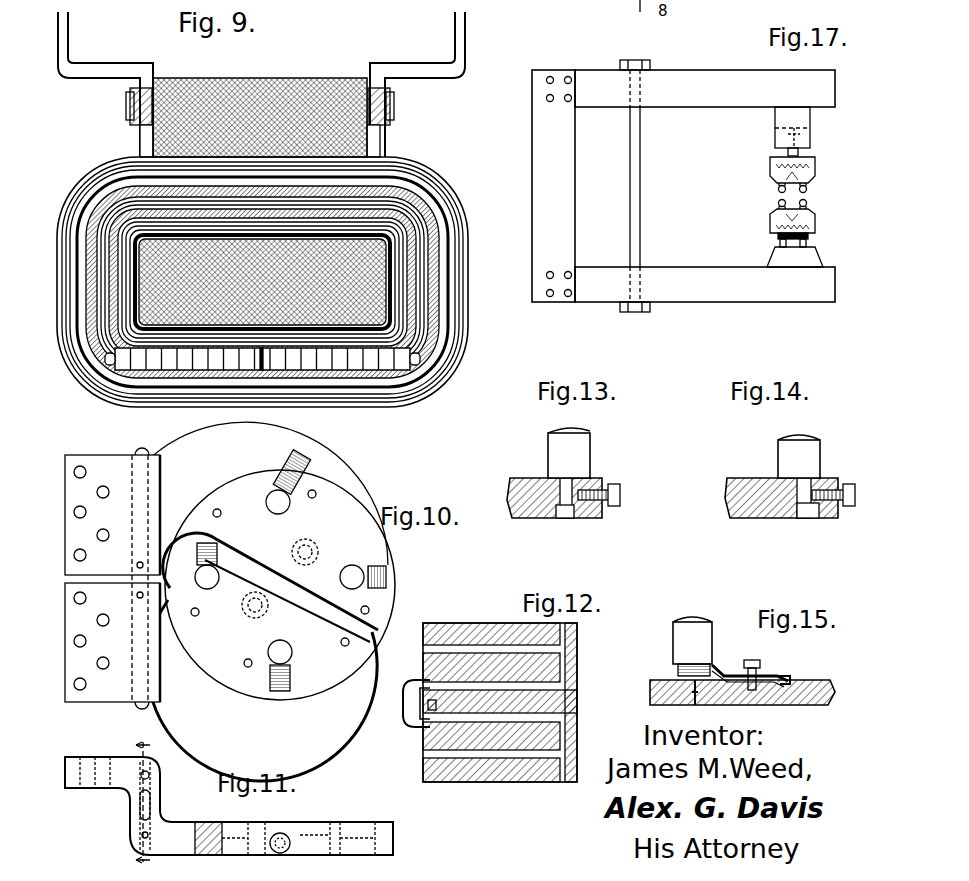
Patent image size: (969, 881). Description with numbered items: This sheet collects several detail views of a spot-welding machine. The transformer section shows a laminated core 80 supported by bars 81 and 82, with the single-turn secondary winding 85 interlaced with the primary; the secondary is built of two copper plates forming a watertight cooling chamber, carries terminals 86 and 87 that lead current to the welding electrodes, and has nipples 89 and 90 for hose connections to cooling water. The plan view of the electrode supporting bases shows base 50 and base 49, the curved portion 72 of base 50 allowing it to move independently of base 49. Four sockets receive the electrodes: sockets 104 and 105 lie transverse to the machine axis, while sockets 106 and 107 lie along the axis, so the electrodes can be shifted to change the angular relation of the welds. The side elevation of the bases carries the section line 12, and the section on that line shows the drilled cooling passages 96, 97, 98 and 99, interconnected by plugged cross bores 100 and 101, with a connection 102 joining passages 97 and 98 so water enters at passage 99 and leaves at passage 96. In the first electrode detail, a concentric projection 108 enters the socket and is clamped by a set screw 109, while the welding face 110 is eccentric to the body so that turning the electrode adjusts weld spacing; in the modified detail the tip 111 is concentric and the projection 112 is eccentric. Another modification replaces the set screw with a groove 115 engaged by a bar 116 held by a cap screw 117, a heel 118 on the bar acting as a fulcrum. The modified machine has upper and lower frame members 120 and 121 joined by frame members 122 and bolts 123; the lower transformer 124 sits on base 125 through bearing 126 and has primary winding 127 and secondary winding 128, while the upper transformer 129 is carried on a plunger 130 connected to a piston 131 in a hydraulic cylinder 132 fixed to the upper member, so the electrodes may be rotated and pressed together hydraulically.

In FIG. 9, the core 80 is at (268, 86).
In FIG. 9, the bar 81 is at (68, 33).
In FIG. 9, the bar 82 is at (465, 25).
In FIG. 9, the secondary winding 85 is at (406, 214).
In FIG. 9, the terminal 86 is at (125, 378).
In FIG. 9, the terminal 87 is at (340, 368).
In FIG. 9, the nipple 89 is at (90, 370).
In FIG. 9, the nipple 90 is at (425, 358).
In FIG. 17, the upper frame member 120 is at (702, 82).
In FIG. 17, the lower frame member 121 is at (694, 290).
In FIG. 17, the frame member 122 is at (546, 150).
In FIG. 17, the bolt 123 is at (639, 197).
In FIG. 17, the lower transformer 124 is at (817, 213).
In FIG. 17, the base 125 is at (815, 252).
In FIG. 17, the bearing 126 is at (778, 245).
In FIG. 17, the primary winding 127 is at (775, 228).
In FIG. 17, the secondary winding 128 is at (775, 213).
In FIG. 17, the upper transformer 129 is at (815, 170).
In FIG. 17, the plunger 130 is at (773, 155).
In FIG. 17, the piston 131 is at (776, 133).
In FIG. 17, the hydraulic cylinder 132 is at (782, 118).
In FIG. 10, the electrode supporting base 49 is at (298, 682).
In FIG. 10, the electrode supporting base 50 is at (340, 494).
In FIG. 10, the curved portion 72 is at (192, 522).
In FIG. 10, the socket 104 is at (288, 508).
In FIG. 10, the socket 105 is at (292, 652).
In FIG. 10, the socket 106 is at (208, 589).
In FIG. 10, the socket 107 is at (350, 570).
In FIG. 11, the connection 102 is at (138, 808).
In FIG. 12, the connection 102 is at (403, 708).
In FIG. 11, the section line 12 is at (125, 801).
In FIG. 12, the passage 96 is at (468, 640).
In FIG. 12, the passage 97 is at (425, 672).
In FIG. 12, the passage 98 is at (425, 745).
In FIG. 12, the passage 99 is at (423, 768).
In FIG. 12, the cross bore 100 is at (578, 660).
In FIG. 12, the cross bore 101 is at (580, 735).
In FIG. 13, the projection 108 is at (565, 512).
In FIG. 13, the set screw 109 is at (618, 490).
In FIG. 13, the electrode tip 110 is at (575, 431).
In FIG. 14, the welding tip 111 is at (800, 440).
In FIG. 14, the projection 112 is at (808, 518).
In FIG. 15, the groove 115 is at (678, 668).
In FIG. 15, the bar 116 is at (716, 664).
In FIG. 15, the cap screw 117 is at (767, 660).
In FIG. 15, the heel 118 is at (790, 673).